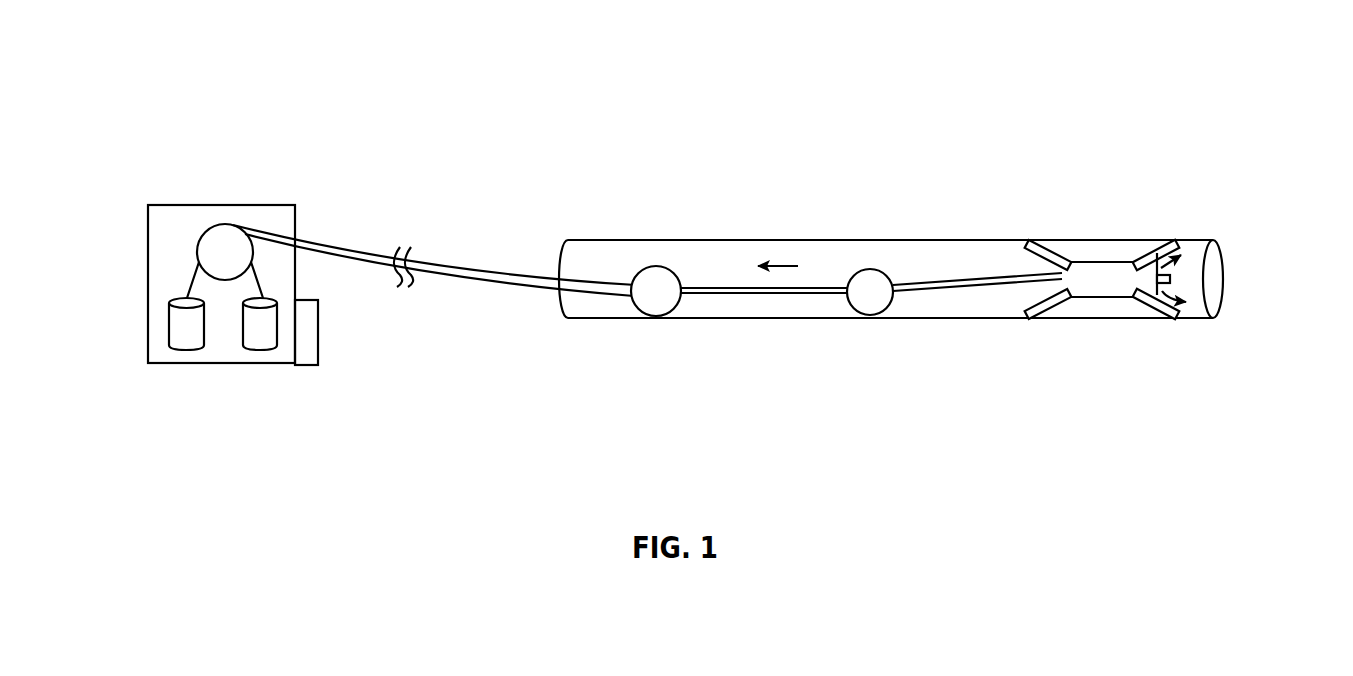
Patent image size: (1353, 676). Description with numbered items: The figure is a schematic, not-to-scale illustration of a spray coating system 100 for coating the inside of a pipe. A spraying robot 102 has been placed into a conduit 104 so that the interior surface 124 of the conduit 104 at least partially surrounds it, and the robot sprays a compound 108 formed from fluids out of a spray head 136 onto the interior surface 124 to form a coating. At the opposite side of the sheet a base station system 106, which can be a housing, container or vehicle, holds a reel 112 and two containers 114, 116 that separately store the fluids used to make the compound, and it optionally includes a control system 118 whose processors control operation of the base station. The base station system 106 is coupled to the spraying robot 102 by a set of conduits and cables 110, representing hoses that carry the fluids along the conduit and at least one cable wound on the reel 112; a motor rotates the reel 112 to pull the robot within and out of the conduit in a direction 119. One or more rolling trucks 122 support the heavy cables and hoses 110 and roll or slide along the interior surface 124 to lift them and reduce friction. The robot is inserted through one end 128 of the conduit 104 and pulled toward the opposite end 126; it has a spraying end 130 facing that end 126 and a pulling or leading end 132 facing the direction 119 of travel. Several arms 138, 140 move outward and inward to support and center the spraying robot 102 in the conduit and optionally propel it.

The spray coating system 100 is at (182, 92).
The spraying robot 102 is at (1025, 400).
The conduit 104 is at (952, 240).
The base station system 106 is at (148, 440).
The compound 108 is at (1195, 305).
The conduits and cables 110 is at (452, 268).
The reel 112 is at (221, 242).
The container 114 is at (183, 352).
The container 116 is at (257, 352).
The control system 118 is at (305, 298).
The direction 119 is at (777, 263).
The rolling trucks 122 is at (872, 288).
The interior surface 124 is at (732, 246).
The end 126 is at (1211, 237).
The end 128 is at (548, 306).
The spraying end 130 is at (1186, 281).
The leading end 132 is at (1028, 291).
The spray head 136 is at (1186, 259).
The arms 138 is at (1034, 306).
The arms 140 is at (1153, 293).